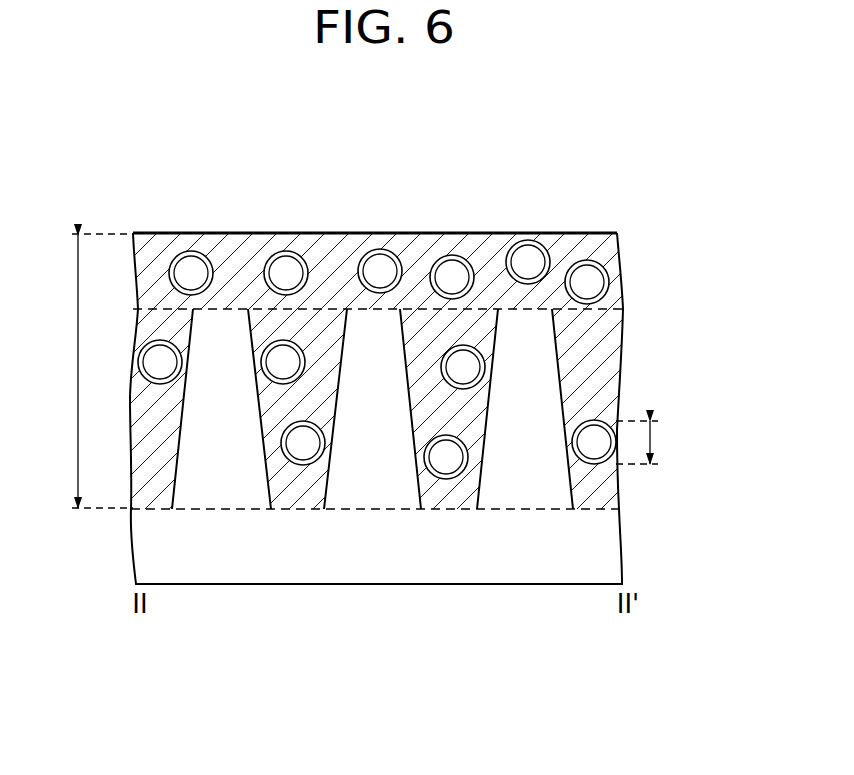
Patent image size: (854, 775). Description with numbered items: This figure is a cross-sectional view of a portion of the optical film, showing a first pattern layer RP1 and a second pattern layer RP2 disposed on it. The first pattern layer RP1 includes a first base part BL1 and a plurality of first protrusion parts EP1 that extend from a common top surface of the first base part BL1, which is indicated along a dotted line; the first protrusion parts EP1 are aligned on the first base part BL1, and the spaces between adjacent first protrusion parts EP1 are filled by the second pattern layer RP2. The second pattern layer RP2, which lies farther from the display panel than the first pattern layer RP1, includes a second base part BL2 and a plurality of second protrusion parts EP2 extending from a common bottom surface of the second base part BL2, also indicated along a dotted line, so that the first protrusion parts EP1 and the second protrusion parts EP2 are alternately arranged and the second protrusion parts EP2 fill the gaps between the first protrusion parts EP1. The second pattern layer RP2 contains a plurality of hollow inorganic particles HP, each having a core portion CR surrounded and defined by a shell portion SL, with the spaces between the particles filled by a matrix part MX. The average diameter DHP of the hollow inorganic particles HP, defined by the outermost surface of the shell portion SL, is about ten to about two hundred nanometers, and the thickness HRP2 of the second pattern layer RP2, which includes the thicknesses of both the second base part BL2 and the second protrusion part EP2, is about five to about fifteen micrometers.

The hollow inorganic particle HP is at (203, 210).
The core portion CR is at (186, 268).
The shell portion SL is at (204, 254).
The matrix part MX is at (331, 266).
The second base part BL2 is at (427, 322).
The second protrusion part EP2 is at (712, 250).
The second pattern layer RP2 is at (427, 322).
The first protrusion part EP1 is at (360, 495).
The first base part BL1 is at (337, 652).
The first pattern layer RP1 is at (377, 503).
The thickness of the second pattern layer HRP2 is at (79, 371).
The average diameter of the hollow inorganic particles DHP is at (654, 442).